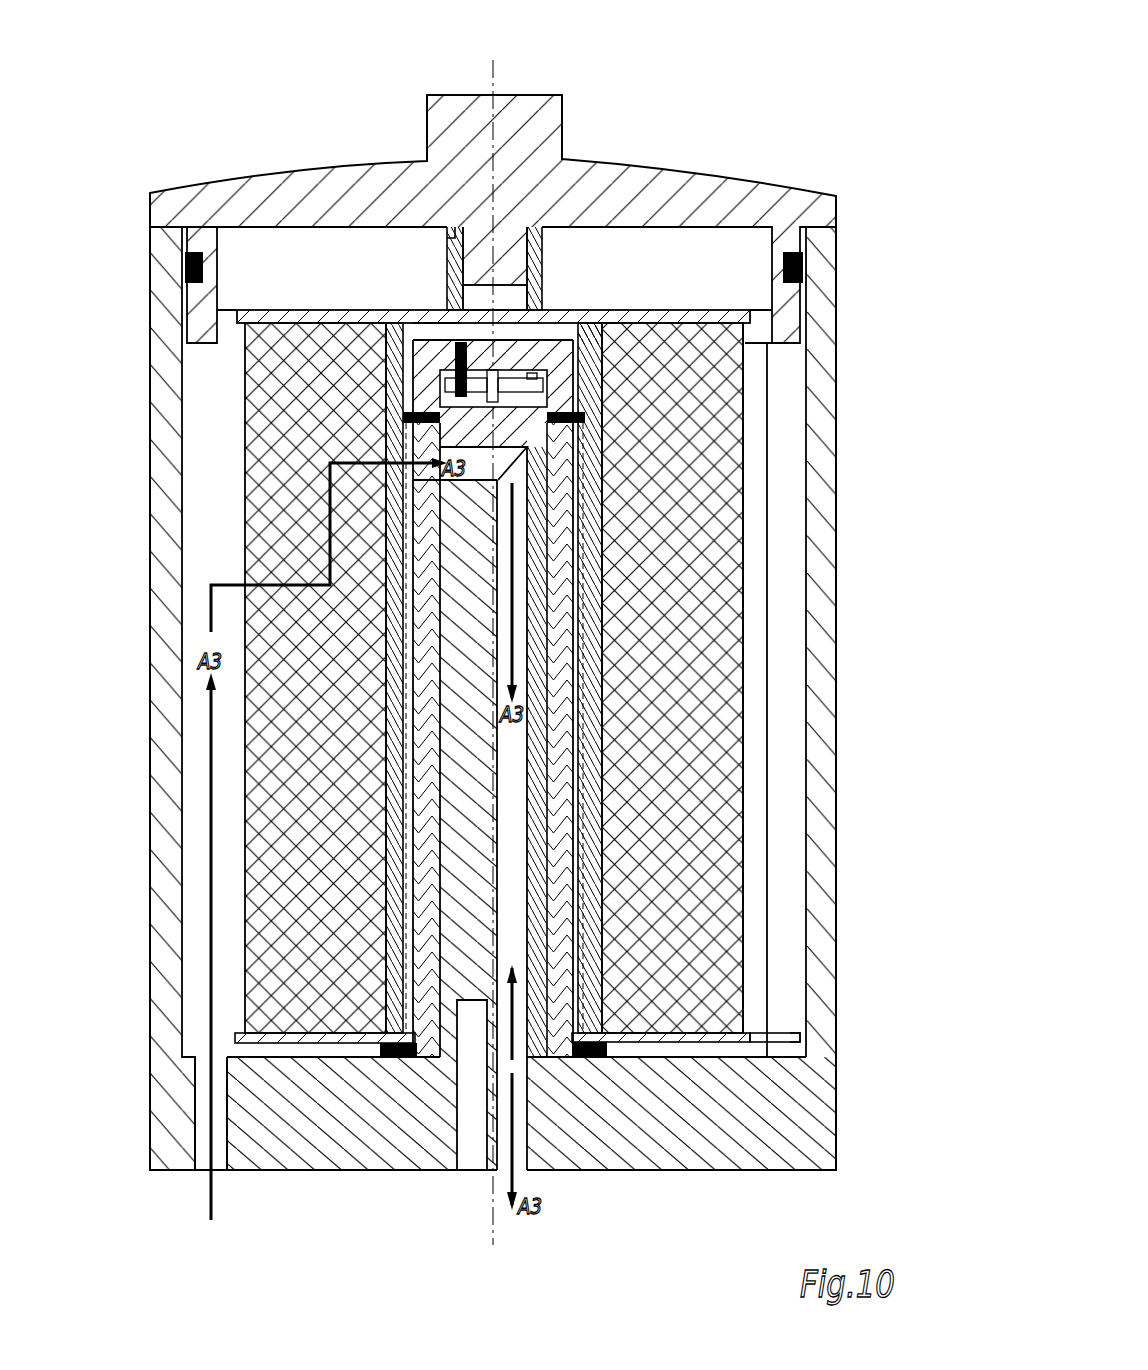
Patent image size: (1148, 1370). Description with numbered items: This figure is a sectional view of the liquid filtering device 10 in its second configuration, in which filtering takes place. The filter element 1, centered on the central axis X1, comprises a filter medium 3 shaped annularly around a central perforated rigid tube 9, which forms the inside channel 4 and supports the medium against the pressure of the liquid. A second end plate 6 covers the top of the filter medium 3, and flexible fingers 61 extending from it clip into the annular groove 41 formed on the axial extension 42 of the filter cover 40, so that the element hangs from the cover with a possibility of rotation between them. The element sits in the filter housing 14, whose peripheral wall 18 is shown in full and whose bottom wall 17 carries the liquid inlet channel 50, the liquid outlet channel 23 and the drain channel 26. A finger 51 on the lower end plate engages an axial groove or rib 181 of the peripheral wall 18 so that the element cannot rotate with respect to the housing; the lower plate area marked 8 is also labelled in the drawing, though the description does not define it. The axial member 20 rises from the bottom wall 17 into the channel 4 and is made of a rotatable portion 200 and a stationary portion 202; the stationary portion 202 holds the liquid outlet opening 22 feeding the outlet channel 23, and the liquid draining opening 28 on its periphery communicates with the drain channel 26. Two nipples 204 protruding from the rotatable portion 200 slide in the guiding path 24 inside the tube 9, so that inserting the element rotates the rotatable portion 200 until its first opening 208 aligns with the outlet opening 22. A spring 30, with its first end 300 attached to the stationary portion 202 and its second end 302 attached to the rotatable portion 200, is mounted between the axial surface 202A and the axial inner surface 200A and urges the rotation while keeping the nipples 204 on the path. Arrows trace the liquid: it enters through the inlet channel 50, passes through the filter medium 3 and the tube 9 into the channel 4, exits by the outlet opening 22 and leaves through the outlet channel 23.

The liquid filtering device 10 is at (855, 108).
The central axis X1 is at (489, 635).
The filter cover 40 is at (323, 203).
The second end of the spring 302 is at (452, 235).
The annular groove 41 is at (447, 233).
The flexible fingers 61 is at (520, 255).
The axial extension 42 is at (495, 255).
The peripheral wall 18 is at (160, 520).
The axial groove or rib 181 is at (790, 580).
The filter housing 14 is at (150, 785).
The liquid inlet channel 50 is at (205, 1145).
The liquid draining opening 28 is at (445, 1020).
The drain channel 26 is at (465, 1145).
The liquid outlet channel 23 is at (518, 985).
The liquid outlet opening 22 is at (463, 453).
The spring 30 is at (545, 380).
The first end of the spring 300 is at (515, 382).
The second end plate 6 is at (453, 372).
The nipples 204 is at (425, 404).
The guiding path 24 is at (390, 318).
The channel 4 is at (427, 308).
The axial inner surface 200A is at (600, 325).
The filter medium 3 is at (690, 875).
The filter element 1 is at (761, 490).
The axial member 20 is at (505, 690).
The rotatable portion 200 is at (437, 632).
The stationary portion 202 is at (470, 690).
The axial surface 202A is at (580, 445).
The first opening 208 is at (407, 477).
The central perforated rigid tube 9 is at (590, 958).
The bottom wall 17 is at (680, 1005).
The end plate lip 8 is at (740, 1037).
The finger 51 is at (800, 1040).